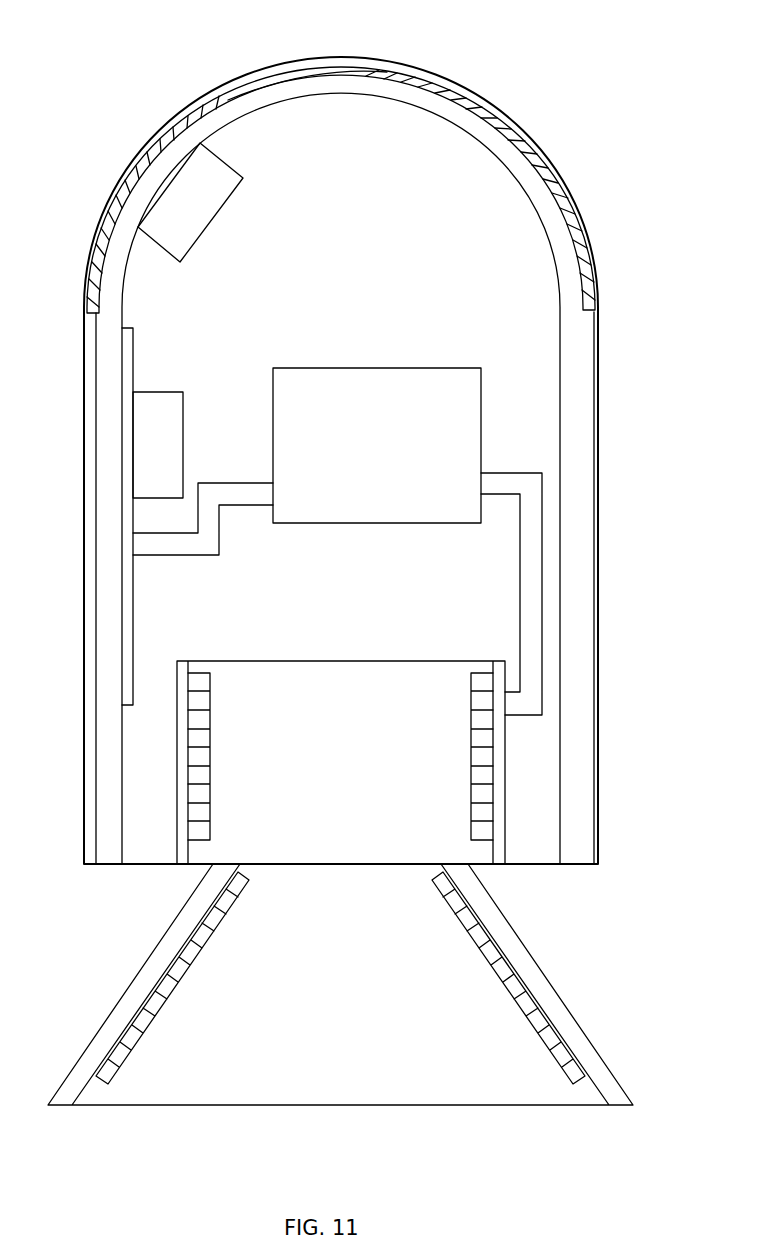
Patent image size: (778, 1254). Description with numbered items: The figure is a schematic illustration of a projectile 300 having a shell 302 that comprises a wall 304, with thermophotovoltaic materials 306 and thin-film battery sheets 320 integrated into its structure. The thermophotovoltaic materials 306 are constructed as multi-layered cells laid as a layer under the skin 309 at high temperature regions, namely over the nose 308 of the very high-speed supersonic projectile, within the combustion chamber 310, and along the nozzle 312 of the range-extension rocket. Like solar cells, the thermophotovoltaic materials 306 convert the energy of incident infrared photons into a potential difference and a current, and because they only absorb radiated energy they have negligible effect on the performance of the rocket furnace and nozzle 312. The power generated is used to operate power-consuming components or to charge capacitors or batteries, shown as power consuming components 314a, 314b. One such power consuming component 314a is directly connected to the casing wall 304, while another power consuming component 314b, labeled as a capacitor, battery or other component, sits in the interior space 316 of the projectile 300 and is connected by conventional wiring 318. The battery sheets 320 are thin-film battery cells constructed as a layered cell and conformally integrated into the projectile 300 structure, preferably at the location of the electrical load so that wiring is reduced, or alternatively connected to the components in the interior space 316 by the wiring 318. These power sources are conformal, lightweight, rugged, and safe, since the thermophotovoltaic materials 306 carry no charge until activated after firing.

The projectile 300 is at (396, 460).
The shell 302 is at (606, 352).
The wall 304 is at (600, 392).
The thermophotovoltaic materials 306 is at (143, 163).
The nose 308 is at (313, 64).
The skin 309 is at (452, 75).
The combustion chamber 310 is at (340, 657).
The nozzle 312 is at (566, 982).
The power consuming component 314a is at (222, 213).
The power consuming component 314b is at (375, 368).
The interior space 316 is at (360, 258).
The wiring 318 is at (164, 536).
The battery sheets 320 is at (133, 363).